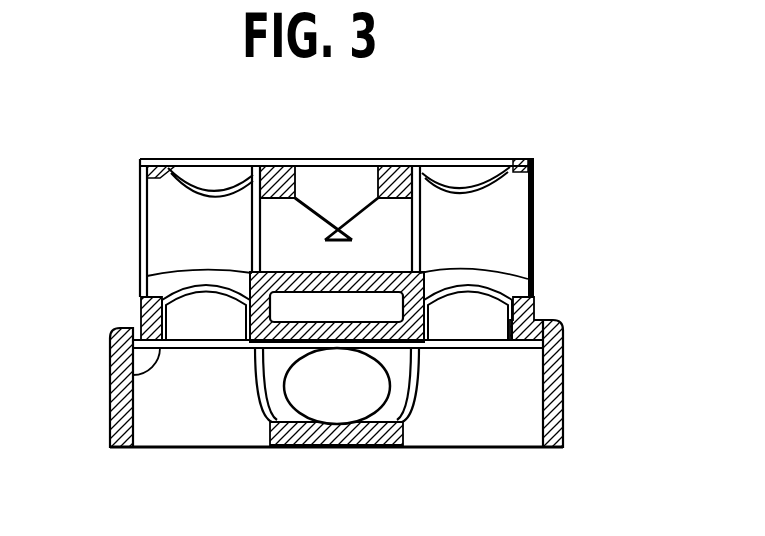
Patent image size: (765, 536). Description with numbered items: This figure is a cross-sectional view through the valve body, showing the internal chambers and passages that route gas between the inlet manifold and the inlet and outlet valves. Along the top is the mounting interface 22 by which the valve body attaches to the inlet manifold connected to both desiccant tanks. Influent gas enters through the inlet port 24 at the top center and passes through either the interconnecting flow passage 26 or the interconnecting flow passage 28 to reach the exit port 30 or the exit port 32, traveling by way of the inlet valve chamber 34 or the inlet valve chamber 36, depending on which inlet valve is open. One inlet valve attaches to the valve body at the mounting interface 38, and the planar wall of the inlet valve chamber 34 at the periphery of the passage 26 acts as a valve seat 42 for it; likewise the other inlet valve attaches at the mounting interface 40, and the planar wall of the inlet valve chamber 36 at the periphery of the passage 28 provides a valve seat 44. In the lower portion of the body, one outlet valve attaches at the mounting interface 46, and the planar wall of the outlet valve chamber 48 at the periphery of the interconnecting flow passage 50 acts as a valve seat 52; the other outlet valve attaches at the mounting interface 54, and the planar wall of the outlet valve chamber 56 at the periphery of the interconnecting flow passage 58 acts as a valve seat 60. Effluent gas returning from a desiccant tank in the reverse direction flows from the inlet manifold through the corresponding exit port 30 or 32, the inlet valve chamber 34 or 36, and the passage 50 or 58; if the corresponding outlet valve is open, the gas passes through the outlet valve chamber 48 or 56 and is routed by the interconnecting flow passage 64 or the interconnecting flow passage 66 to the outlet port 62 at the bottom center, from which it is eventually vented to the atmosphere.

The mounting interface 22 is at (150, 160).
The inlet port 24 is at (342, 160).
The interconnecting flow passage 26 is at (282, 217).
The interconnecting flow passage 28 is at (388, 212).
The exit port 30 is at (186, 164).
The exit port 32 is at (470, 158).
The inlet valve chamber 34 is at (183, 203).
The inlet valve chamber 36 is at (473, 198).
The mounting interface 38 is at (143, 237).
The mounting interface 40 is at (533, 245).
The valve seat 42 is at (150, 277).
The valve seat 44 is at (533, 279).
The mounting interface 46 is at (210, 447).
The outlet valve chamber 48 is at (168, 408).
The interconnecting flow passage 50 is at (185, 320).
The valve seat 52 is at (112, 375).
The mounting interface 54 is at (478, 447).
The outlet valve chamber 56 is at (515, 405).
The interconnecting flow passage 58 is at (477, 312).
The valve seat 60 is at (520, 347).
The outlet port 62 is at (342, 405).
The interconnecting flow passage 64 is at (273, 407).
The interconnecting flow passage 66 is at (397, 405).